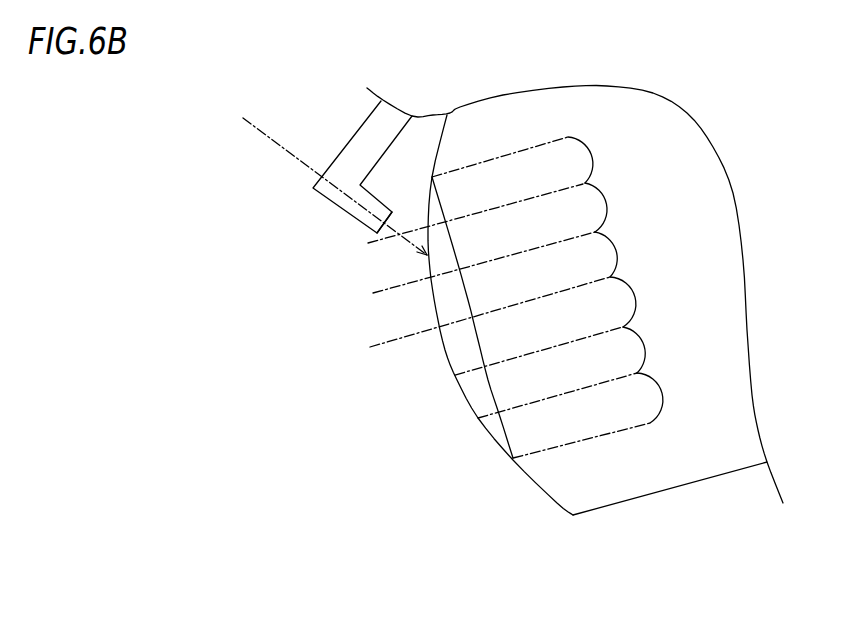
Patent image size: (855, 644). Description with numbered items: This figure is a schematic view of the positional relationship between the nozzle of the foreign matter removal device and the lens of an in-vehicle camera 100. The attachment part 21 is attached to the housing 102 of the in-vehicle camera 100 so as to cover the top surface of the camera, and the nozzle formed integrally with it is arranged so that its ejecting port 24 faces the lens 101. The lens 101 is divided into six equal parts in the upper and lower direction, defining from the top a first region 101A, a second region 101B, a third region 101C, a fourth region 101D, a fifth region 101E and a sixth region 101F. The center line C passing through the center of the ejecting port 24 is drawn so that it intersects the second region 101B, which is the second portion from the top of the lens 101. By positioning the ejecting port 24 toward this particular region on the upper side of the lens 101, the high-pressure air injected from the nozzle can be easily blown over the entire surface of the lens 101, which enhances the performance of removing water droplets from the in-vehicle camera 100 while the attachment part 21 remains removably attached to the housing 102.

The in-vehicle camera 100 is at (552, 512).
The lens 101 is at (447, 349).
The first region 101A is at (538, 160).
The second region 101B is at (512, 213).
The third region 101C is at (522, 262).
The fourth region 101D is at (527, 312).
The fifth region 101E is at (576, 351).
The sixth region 101F is at (594, 415).
The housing 102 is at (640, 475).
The attachment part 21 is at (355, 152).
The ejecting port 24 is at (383, 237).
The center line C is at (277, 142).